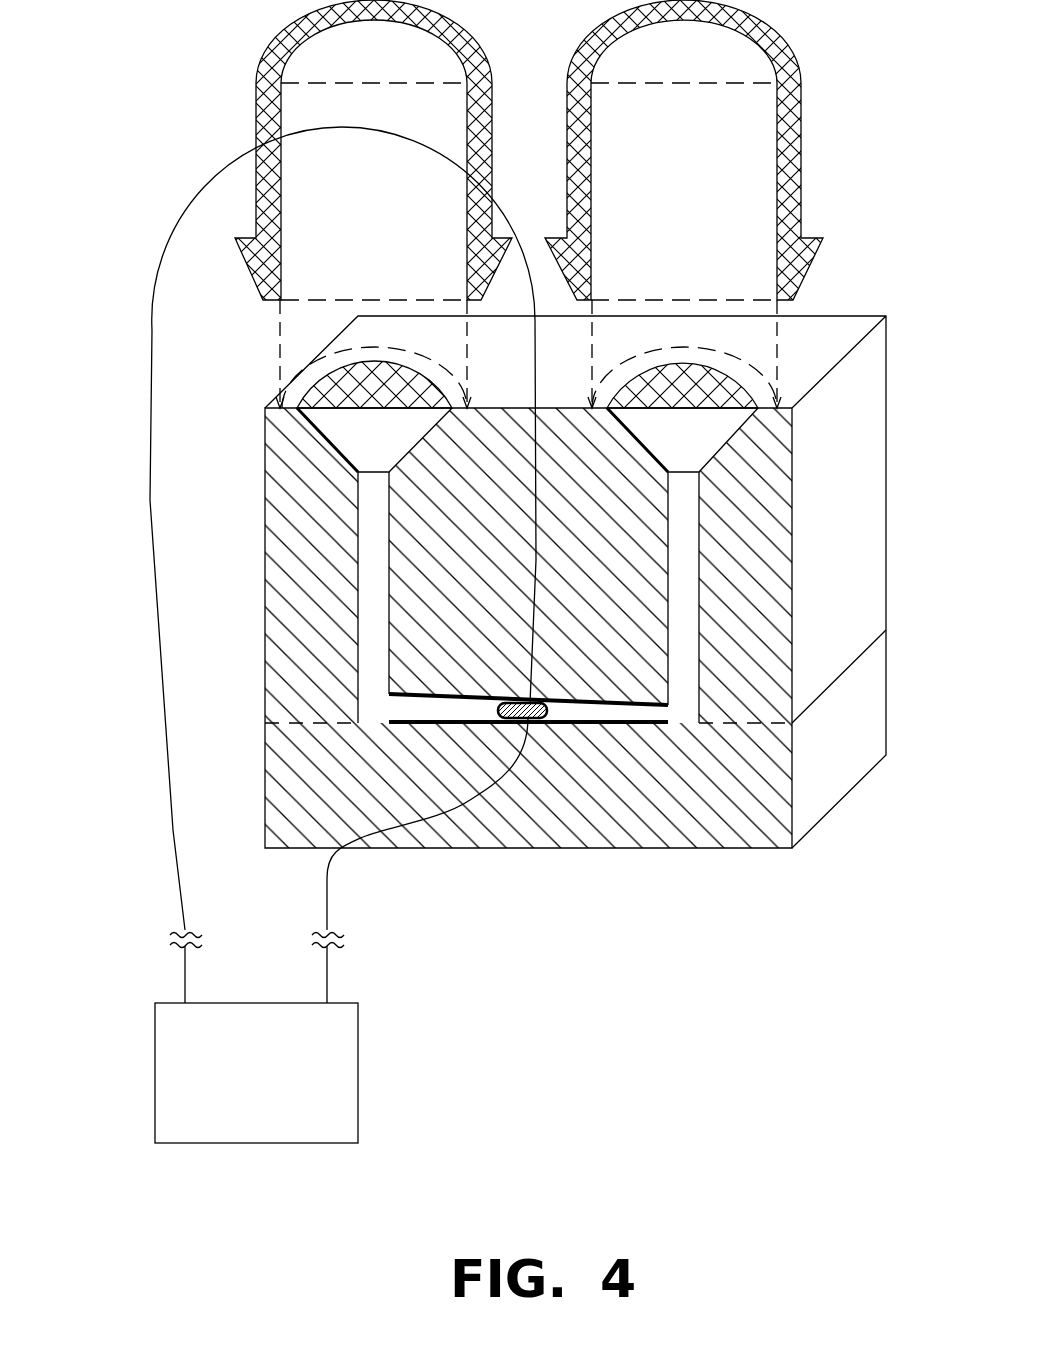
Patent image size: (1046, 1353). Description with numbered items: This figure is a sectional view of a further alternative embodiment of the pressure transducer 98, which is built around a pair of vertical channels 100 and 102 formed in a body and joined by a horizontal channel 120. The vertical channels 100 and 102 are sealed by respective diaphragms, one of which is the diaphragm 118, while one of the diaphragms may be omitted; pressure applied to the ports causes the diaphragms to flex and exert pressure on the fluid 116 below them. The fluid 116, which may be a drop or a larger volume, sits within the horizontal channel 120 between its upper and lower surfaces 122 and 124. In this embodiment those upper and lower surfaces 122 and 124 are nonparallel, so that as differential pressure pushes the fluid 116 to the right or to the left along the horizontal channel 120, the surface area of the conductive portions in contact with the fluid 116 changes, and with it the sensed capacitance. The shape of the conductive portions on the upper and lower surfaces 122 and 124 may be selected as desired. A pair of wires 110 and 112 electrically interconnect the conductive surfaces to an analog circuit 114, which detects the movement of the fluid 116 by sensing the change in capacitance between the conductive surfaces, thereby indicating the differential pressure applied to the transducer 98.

The pressure transducer 98 is at (222, 705).
The vertical channel 100 is at (357, 535).
The vertical channel 102 is at (700, 568).
The wire 110 is at (173, 827).
The wire 112 is at (330, 876).
The analog circuit 114 is at (358, 1032).
The fluid 116 is at (358, 378).
The diaphragm 118 is at (717, 387).
The horizontal channel 120 is at (668, 713).
The upper surface 122 is at (607, 710).
The lower surface 124 is at (566, 714).